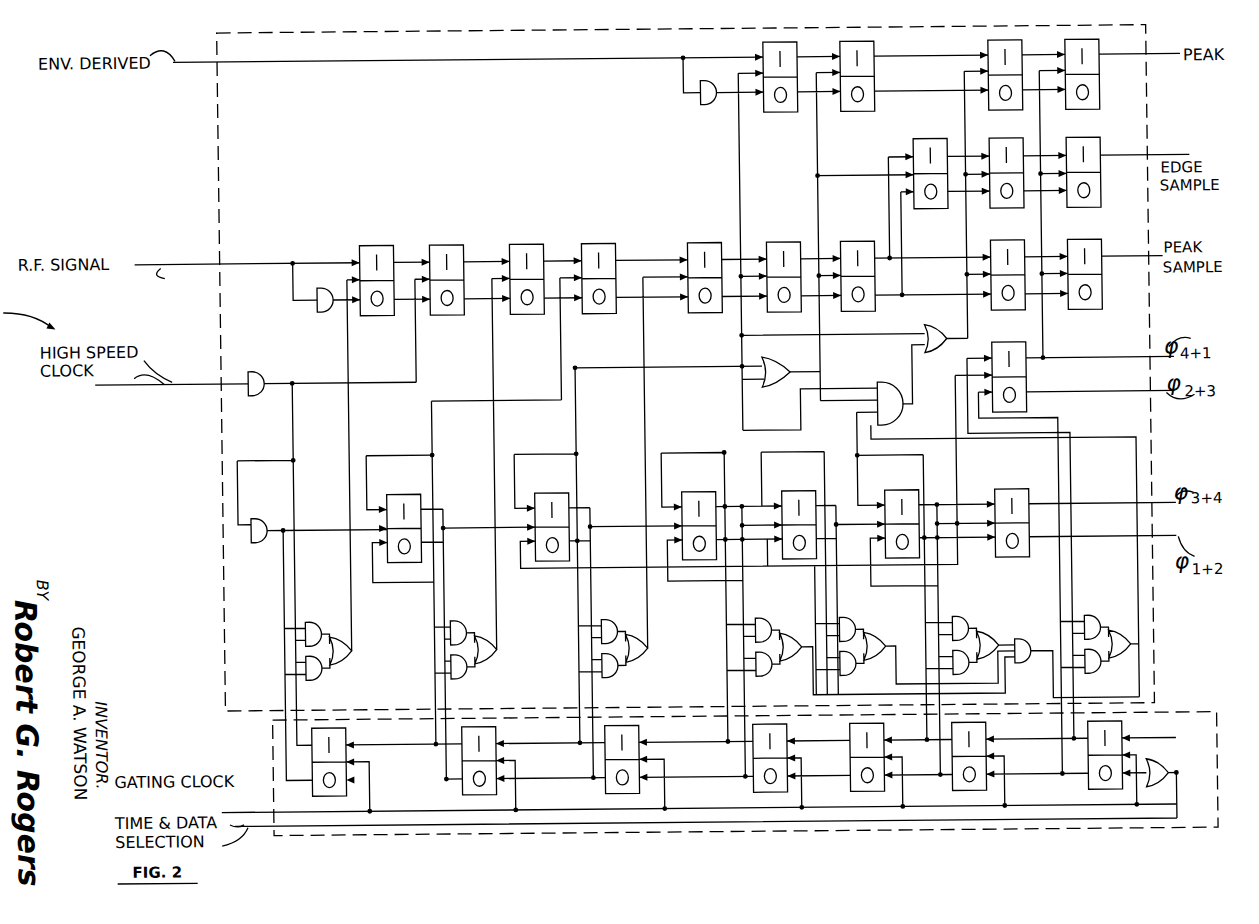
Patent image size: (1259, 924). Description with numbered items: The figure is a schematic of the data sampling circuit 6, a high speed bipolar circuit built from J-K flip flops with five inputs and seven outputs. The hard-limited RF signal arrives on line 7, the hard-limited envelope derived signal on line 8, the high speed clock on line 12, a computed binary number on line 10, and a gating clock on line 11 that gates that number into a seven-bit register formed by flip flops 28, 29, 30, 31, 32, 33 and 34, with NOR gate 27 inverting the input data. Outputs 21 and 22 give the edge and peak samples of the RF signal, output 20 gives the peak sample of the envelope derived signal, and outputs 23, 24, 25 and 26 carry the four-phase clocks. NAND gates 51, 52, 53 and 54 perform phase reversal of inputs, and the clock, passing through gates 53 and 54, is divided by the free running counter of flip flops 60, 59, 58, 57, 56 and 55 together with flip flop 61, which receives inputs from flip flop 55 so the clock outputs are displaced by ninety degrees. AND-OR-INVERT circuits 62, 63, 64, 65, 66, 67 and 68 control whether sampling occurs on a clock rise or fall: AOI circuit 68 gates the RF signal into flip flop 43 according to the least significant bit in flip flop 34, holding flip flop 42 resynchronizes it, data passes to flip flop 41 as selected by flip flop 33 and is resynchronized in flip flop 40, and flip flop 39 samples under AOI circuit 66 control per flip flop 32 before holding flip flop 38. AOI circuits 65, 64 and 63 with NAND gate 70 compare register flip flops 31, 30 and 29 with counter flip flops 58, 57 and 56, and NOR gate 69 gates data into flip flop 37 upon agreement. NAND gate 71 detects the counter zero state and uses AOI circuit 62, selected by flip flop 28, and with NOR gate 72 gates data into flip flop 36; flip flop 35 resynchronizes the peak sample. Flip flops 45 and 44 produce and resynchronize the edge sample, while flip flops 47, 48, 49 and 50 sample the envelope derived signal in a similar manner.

The sampling circuit 6 is at (89, 525).
The line carrying hard-limited RF signal 7 is at (170, 268).
The line carrying envelope derived signal 8 is at (400, 64).
The line carrying computed binary number 10 is at (252, 827).
The clock signal line 11 is at (208, 790).
The high speed clock line 12 is at (200, 386).
The output 20 is at (1108, 66).
The output 21 is at (1112, 166).
The output 22 is at (1118, 264).
The output 23 is at (1082, 365).
The output 24 is at (1066, 399).
The output 25 is at (1128, 511).
The output 26 is at (1118, 545).
The NOR gate 27 is at (1154, 790).
The flip flop 28 is at (1102, 742).
The flip flop 29 is at (968, 742).
The flip flop 30 is at (864, 742).
The flip flop 31 is at (766, 742).
The flip flop 32 is at (620, 742).
The flip flop 33 is at (478, 742).
The flip flop 34 is at (328, 742).
The flip flop 35 is at (1069, 264).
The flip flop 36 is at (997, 263).
The flip flop 37 is at (842, 261).
The flip flop 38 is at (765, 260).
The flip flop 39 is at (689, 259).
The flip flop 40 is at (928, 160).
The flip flop 41 is at (520, 258).
The flip flop 42 is at (445, 257).
The flip flop 43 is at (379, 256).
The flip flop 44 is at (1080, 162).
The flip flop 45 is at (1002, 162).
The flip flop 47 is at (1072, 54).
The flip flop 48 is at (988, 56).
The flip flop 49 is at (866, 62).
The flip flop 50 is at (760, 52).
The NAND gate 51 is at (710, 103).
The NAND gate 52 is at (318, 314).
The NAND gate 53 is at (254, 394).
The NAND gate 54 is at (256, 543).
The flip flop 55 is at (996, 514).
The flip flop 56 is at (887, 513).
The flip flop 57 is at (777, 512).
The flip flop 58 is at (691, 511).
The flip flop 59 is at (537, 510).
The flip flop 60 is at (394, 509).
The flip flop 61 is at (1004, 361).
The AND-OR-INVERT circuit 62 is at (1091, 634).
The AND-OR-INVERT circuit 63 is at (974, 630).
The AND-OR-INVERT circuit 64 is at (867, 631).
The AND-OR-INVERT circuit 65 is at (765, 628).
The AND-OR-INVERT circuit 66 is at (601, 624).
The AND-OR-INVERT circuit 67 is at (496, 633).
The AND-OR-INVERT circuit 68 is at (305, 622).
The NOR gate 69 is at (780, 370).
The NAND gate 70 is at (1021, 668).
The NAND gate 71 is at (886, 390).
The NOR gate 72 is at (934, 336).